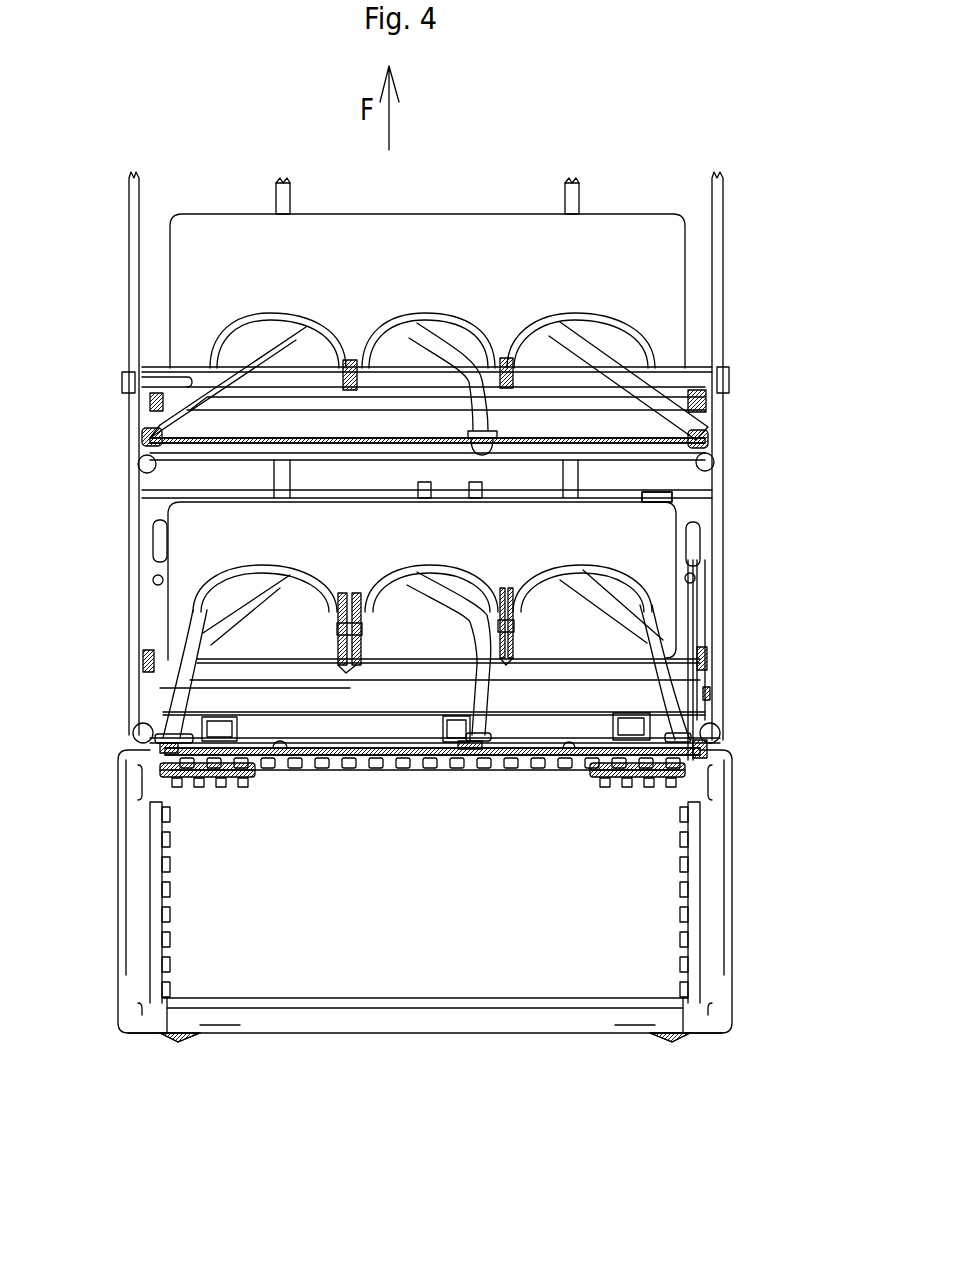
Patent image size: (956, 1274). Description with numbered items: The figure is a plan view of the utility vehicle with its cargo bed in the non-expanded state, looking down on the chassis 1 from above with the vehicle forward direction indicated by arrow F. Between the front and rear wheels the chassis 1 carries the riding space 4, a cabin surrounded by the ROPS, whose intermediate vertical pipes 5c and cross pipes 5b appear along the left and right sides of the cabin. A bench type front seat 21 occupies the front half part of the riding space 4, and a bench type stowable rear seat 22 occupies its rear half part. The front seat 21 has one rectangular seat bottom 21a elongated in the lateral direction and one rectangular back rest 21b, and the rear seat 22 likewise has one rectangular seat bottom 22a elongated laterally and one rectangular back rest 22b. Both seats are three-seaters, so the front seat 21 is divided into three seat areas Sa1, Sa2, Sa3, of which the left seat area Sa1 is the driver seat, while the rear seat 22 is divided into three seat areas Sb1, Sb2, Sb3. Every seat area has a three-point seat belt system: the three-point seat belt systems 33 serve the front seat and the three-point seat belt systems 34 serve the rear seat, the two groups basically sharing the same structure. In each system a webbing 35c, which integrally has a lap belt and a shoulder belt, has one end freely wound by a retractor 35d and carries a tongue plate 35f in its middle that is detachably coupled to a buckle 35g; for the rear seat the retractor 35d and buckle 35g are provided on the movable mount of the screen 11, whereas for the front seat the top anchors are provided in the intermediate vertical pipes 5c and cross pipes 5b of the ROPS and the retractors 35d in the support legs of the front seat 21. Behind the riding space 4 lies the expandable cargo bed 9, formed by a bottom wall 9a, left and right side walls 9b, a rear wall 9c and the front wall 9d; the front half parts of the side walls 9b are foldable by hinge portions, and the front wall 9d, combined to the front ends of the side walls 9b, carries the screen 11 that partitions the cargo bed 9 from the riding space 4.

The chassis 1 is at (718, 607).
The riding space 4 is at (640, 477).
The cross pipes 5b is at (385, 450).
The intermediate vertical pipes 5c is at (140, 460).
The expandable cargo bed 9 is at (302, 1046).
The bottom wall 9a is at (408, 997).
The left and right side walls 9b is at (137, 865).
The rear wall 9c is at (493, 1023).
The front wall 9d is at (387, 770).
The screen 11 is at (512, 760).
The bench type front seat 21 is at (663, 249).
The seat bottom 21a is at (495, 237).
The back rest 21b is at (230, 417).
The bench type stowable rear seat 22 is at (673, 578).
The seat bottom 22a is at (192, 567).
The back rest 22b is at (220, 697).
The three-point seat belt systems 33 is at (263, 314).
The three-point seat belt systems 34 is at (275, 567).
The webbing 35c is at (236, 612).
The retractor 35d is at (243, 758).
The tongue plate 35f is at (346, 612).
The buckle 35g is at (505, 632).
The seat area Sa1 is at (268, 310).
The seat area Sa2 is at (428, 310).
The seat area Sa3 is at (582, 311).
The seat area Sb1 is at (277, 565).
The seat area Sb2 is at (432, 565).
The seat area Sb3 is at (583, 565).